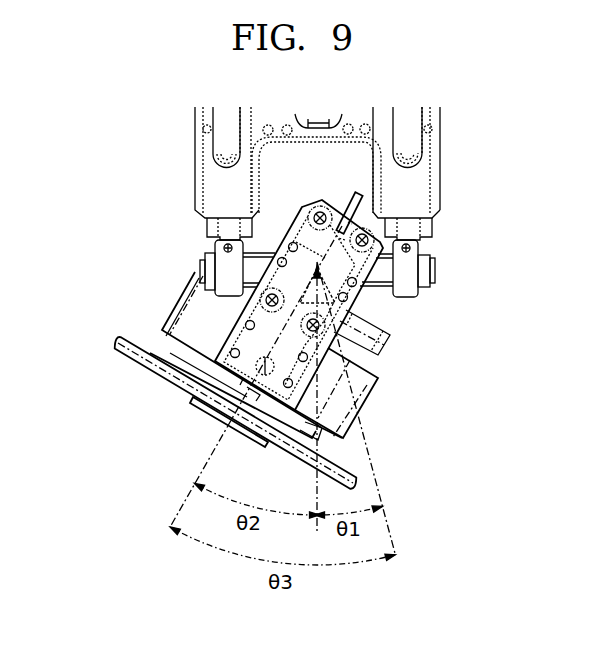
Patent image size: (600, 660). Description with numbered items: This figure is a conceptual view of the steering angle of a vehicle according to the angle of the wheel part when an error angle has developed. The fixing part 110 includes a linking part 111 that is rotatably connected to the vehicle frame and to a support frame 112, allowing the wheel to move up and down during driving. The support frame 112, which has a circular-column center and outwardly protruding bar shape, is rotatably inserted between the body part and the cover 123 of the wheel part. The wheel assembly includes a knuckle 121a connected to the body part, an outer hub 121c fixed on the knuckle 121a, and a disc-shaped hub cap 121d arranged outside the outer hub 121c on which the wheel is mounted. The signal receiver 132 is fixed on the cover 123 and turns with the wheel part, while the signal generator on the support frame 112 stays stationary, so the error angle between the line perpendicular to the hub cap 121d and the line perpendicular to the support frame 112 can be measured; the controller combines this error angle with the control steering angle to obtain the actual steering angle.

The fixing part 110 is at (104, 147).
The linking part 111 is at (214, 153).
The support frame 112 is at (260, 269).
The cover 123 is at (235, 321).
The signal receiver 132 is at (325, 269).
The knuckle 121a is at (192, 337).
The outer hub 121c is at (205, 368).
The hub cap 121d is at (116, 356).